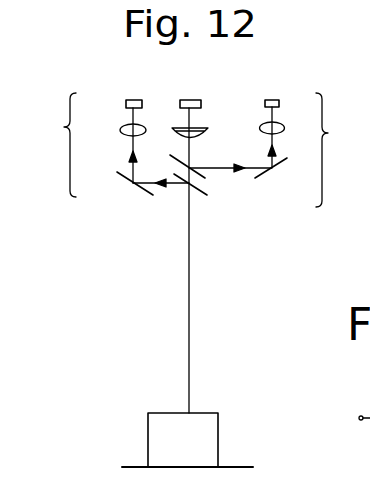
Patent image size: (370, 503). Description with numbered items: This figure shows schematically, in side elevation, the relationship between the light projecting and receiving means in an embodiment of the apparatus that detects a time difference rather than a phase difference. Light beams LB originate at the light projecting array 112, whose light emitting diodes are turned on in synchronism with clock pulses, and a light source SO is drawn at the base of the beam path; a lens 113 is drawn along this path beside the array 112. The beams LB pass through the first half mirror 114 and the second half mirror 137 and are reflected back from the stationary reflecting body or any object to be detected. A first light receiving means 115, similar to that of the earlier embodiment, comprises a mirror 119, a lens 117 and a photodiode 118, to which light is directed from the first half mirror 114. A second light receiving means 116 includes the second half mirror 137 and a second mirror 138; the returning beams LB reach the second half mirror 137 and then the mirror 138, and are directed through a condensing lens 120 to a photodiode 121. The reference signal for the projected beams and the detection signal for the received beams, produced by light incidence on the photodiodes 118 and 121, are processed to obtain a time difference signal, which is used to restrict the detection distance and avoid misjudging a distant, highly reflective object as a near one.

The light projecting array 112 is at (190, 100).
The condenser lens 113 is at (213, 113).
The first half mirror 114 is at (198, 167).
The first light receiving means 115 is at (339, 150).
The second light receiving means 116 is at (54, 145).
The lens 117 is at (290, 113).
The photodiode 118 is at (272, 100).
The deflecting mirror 119 is at (263, 176).
The condensing lens 120 is at (121, 137).
The photodiode 121 is at (133, 100).
The second half mirror 137 is at (197, 197).
The second mirror 138 is at (138, 188).
The light beams LB is at (191, 290).
The light source SO is at (198, 420).